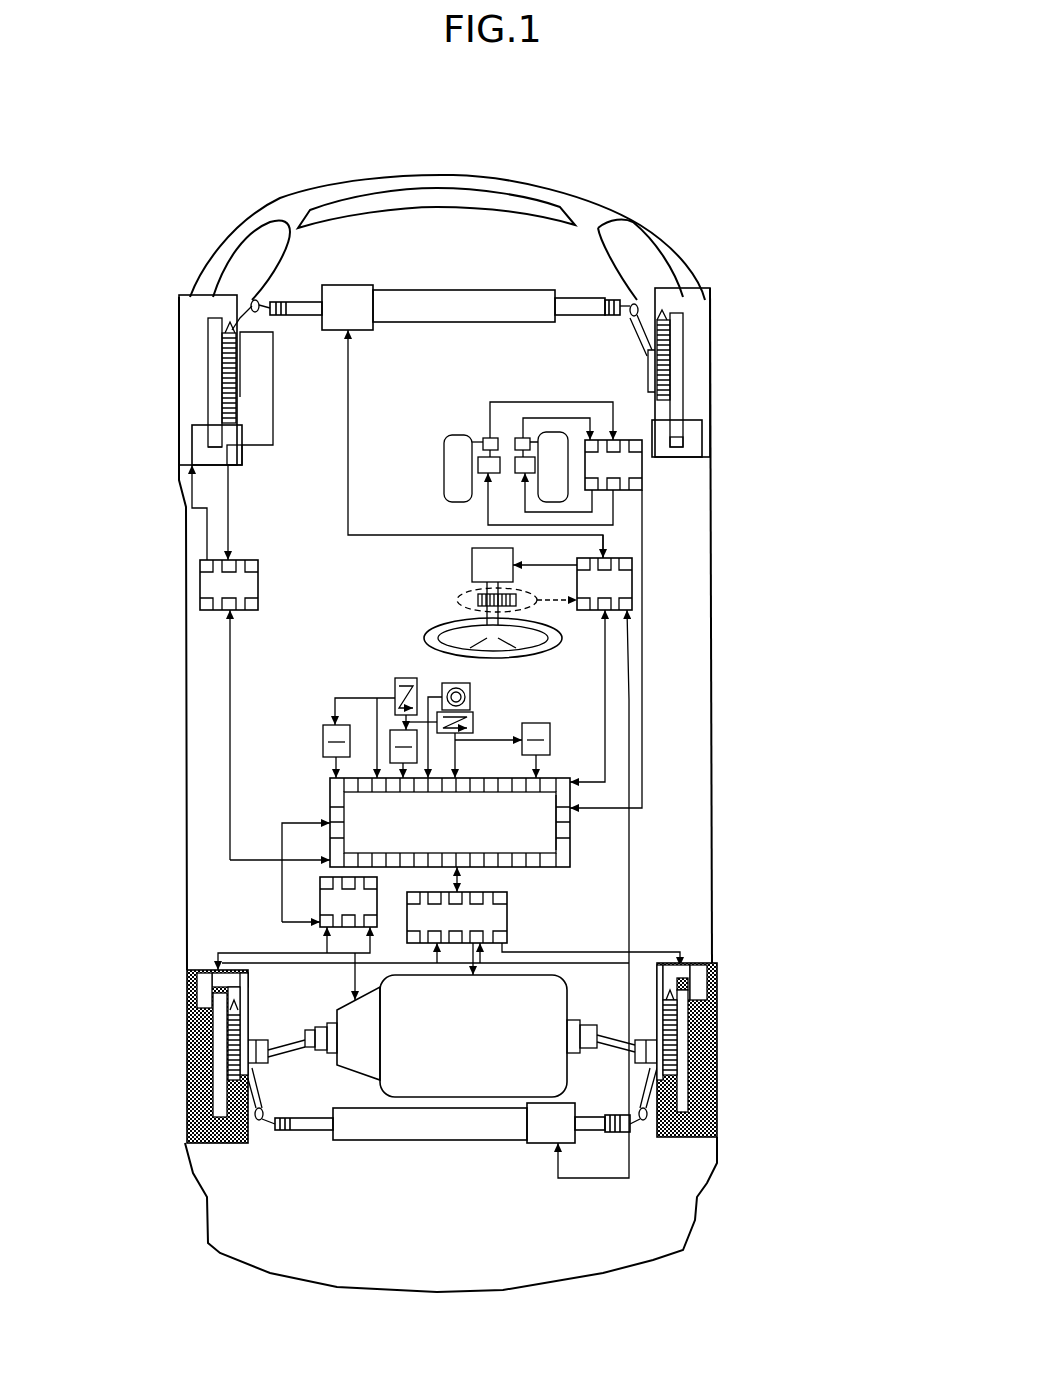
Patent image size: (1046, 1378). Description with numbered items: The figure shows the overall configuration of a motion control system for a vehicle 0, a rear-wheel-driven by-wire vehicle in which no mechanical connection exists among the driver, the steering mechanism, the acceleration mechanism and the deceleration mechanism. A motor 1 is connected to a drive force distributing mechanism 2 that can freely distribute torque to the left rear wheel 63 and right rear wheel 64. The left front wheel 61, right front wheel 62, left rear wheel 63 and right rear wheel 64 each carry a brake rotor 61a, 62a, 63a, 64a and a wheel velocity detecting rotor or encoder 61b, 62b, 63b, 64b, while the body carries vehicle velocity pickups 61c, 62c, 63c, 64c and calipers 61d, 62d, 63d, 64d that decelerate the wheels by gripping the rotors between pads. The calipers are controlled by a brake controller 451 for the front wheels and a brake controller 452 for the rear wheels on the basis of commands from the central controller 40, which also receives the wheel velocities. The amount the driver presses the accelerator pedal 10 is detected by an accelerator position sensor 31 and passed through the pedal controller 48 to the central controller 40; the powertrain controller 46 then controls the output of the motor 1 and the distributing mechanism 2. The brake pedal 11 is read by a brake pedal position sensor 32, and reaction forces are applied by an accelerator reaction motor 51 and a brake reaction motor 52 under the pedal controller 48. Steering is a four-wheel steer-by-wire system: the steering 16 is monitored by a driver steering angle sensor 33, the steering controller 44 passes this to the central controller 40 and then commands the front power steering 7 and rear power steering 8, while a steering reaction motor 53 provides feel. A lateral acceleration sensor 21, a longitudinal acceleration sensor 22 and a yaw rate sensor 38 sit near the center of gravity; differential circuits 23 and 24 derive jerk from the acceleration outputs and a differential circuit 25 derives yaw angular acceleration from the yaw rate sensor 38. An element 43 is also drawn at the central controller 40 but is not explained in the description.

The vehicle 0 is at (585, 205).
The motor 1 is at (558, 1000).
The drive force distributing mechanism 2 is at (345, 1010).
The front power steering 7 is at (478, 297).
The rear power steering 8 is at (540, 1143).
The accelerator pedal 10 is at (555, 432).
The brake pedal 11 is at (458, 435).
The steering 16 is at (552, 650).
The lateral acceleration sensor 21 is at (473, 718).
The longitudinal acceleration sensor 22 is at (405, 678).
The differential circuit 23 is at (546, 723).
The differential circuit 24 is at (323, 740).
The differential circuit 25 is at (390, 745).
The accelerator position sensor 31 is at (523, 438).
The brake pedal position sensor 32 is at (492, 438).
The driver steering angle sensor 33 is at (520, 595).
The yaw rate sensor 38 is at (470, 692).
The central controller 40 is at (557, 848).
The controller interface 43 is at (545, 805).
The steering controller 44 is at (632, 580).
The powertrain controller 46 is at (320, 905).
The pedal controller 48 is at (635, 467).
The accelerator reaction motor 51 is at (522, 473).
The brake reaction motor 52 is at (478, 465).
The steering reaction motor 53 is at (472, 565).
The left front wheel 61 is at (185, 373).
The brake rotor 61a is at (210, 330).
The vehicle wheel velocity detecting rotor 61b is at (225, 397).
The vehicle velocity pickup 61c is at (230, 322).
The caliper 61d is at (200, 448).
The right front wheel 62 is at (702, 375).
The brake rotor 62a is at (685, 330).
The vehicle wheel velocity detecting rotor 62b is at (668, 360).
The vehicle velocity pickup 62c is at (665, 315).
The caliper 62d is at (698, 440).
The left rear wheel 63 is at (187, 1043).
The brake rotor 63a is at (218, 1015).
The vehicle wheel velocity detecting rotor 63b is at (232, 1065).
The vehicle velocity pickup 63c is at (215, 968).
The caliper 63d is at (205, 978).
The right rear wheel 64 is at (717, 1043).
The brake rotor 64a is at (688, 1075).
The vehicle wheel velocity detecting rotor 64b is at (680, 1020).
The vehicle velocity pickup 64c is at (690, 968).
The caliper 64d is at (700, 975).
The brake controller 451 is at (262, 582).
The brake controller 452 is at (507, 912).